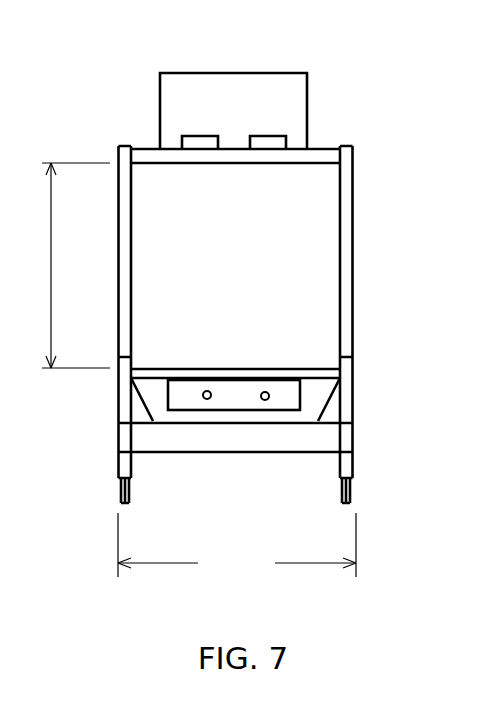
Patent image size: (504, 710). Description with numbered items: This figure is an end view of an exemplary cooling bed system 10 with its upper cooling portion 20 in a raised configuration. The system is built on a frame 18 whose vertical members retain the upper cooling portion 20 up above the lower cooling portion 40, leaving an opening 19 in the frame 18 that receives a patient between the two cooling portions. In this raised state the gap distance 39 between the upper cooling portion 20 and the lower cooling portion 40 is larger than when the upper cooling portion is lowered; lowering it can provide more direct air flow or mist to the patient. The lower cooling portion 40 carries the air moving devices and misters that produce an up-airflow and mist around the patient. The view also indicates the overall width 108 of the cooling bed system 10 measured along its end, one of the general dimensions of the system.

The cooling bed system 10 is at (316, 78).
The upper cooling portion 20 is at (287, 113).
The frame 18 is at (340, 172).
The opening 19 is at (275, 243).
The lower cooling portion 40 is at (313, 405).
The gap distance 39 is at (73, 265).
The width 108 is at (237, 545).